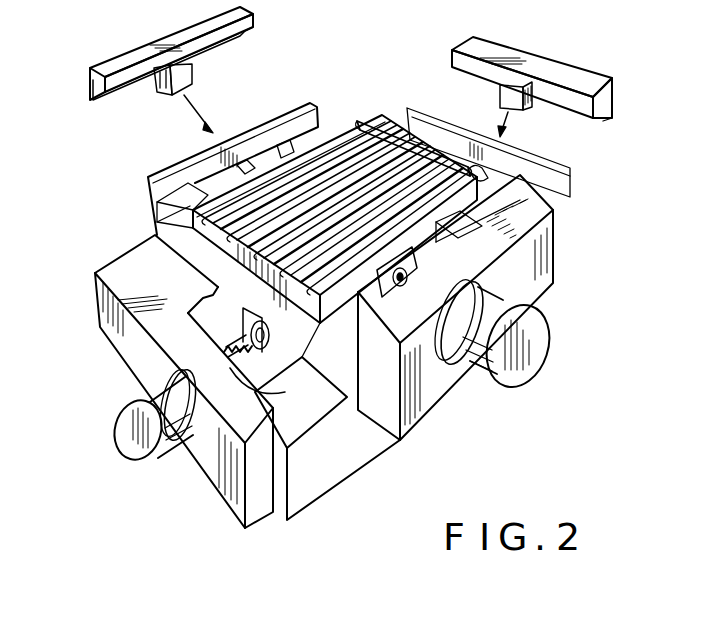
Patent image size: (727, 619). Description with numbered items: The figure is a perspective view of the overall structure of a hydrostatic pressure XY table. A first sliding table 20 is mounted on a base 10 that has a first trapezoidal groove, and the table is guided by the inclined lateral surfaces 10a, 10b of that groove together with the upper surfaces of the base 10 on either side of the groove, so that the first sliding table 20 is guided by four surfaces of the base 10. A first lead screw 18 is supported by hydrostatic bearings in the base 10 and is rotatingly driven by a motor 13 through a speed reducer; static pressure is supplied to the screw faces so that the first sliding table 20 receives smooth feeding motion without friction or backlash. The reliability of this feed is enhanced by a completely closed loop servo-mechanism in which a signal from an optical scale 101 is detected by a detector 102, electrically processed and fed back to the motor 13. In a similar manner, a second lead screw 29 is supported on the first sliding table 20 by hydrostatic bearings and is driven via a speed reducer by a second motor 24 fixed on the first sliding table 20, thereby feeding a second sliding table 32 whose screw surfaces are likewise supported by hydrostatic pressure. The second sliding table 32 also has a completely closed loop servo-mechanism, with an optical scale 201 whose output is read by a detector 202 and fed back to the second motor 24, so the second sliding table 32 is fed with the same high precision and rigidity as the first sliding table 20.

The base 10 is at (327, 463).
The inclined lateral surface of the first trapezoidal groove 10a is at (250, 362).
The inclined lateral surface of the first trapezoidal groove 10b is at (197, 303).
The motor 13 is at (127, 427).
The first lead screw 18 is at (240, 358).
The first sliding table 20 is at (352, 390).
The second motor 24 is at (513, 375).
The second lead screw 29 is at (403, 284).
The second sliding table 32 is at (370, 170).
The optical scale 101 is at (90, 99).
The detector 102 is at (157, 85).
The optical scale 201 is at (614, 99).
The detector 202 is at (530, 97).